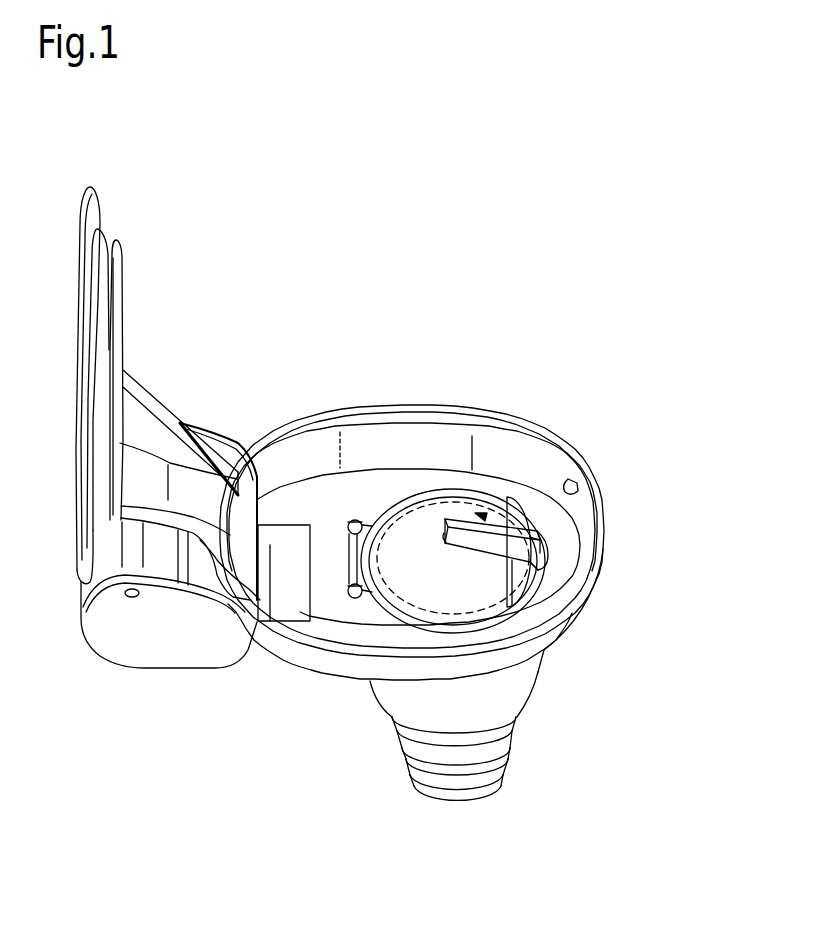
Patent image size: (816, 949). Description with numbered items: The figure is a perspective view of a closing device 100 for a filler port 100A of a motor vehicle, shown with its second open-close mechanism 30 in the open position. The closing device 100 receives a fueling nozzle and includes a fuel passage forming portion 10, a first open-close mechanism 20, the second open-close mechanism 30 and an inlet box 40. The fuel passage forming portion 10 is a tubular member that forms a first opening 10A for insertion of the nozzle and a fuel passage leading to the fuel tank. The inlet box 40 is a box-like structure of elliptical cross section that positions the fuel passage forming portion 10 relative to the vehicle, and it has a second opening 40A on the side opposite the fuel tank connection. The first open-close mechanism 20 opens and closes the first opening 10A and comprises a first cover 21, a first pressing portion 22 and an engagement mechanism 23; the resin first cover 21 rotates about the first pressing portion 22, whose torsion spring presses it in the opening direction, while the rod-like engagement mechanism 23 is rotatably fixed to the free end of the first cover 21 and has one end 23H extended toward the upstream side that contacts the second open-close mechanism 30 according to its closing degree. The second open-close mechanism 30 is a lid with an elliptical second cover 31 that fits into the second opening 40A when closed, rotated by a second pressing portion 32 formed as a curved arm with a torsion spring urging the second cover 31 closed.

The closing device 100 is at (587, 269).
The filler port 100A is at (323, 466).
The fuel passage forming portion 10 is at (540, 677).
The first opening 10A is at (482, 510).
The first open-close mechanism 20 is at (535, 352).
The first cover 21 is at (453, 512).
The first pressing portion 22 is at (362, 518).
The engagement mechanism 23 is at (478, 513).
The one end of the engagement mechanism 23H is at (447, 538).
The second open-close mechanism 30 is at (292, 320).
The second cover 31 is at (126, 340).
The second pressing portion 32 is at (233, 452).
The inlet box 40 is at (602, 527).
The second opening 40A is at (572, 473).